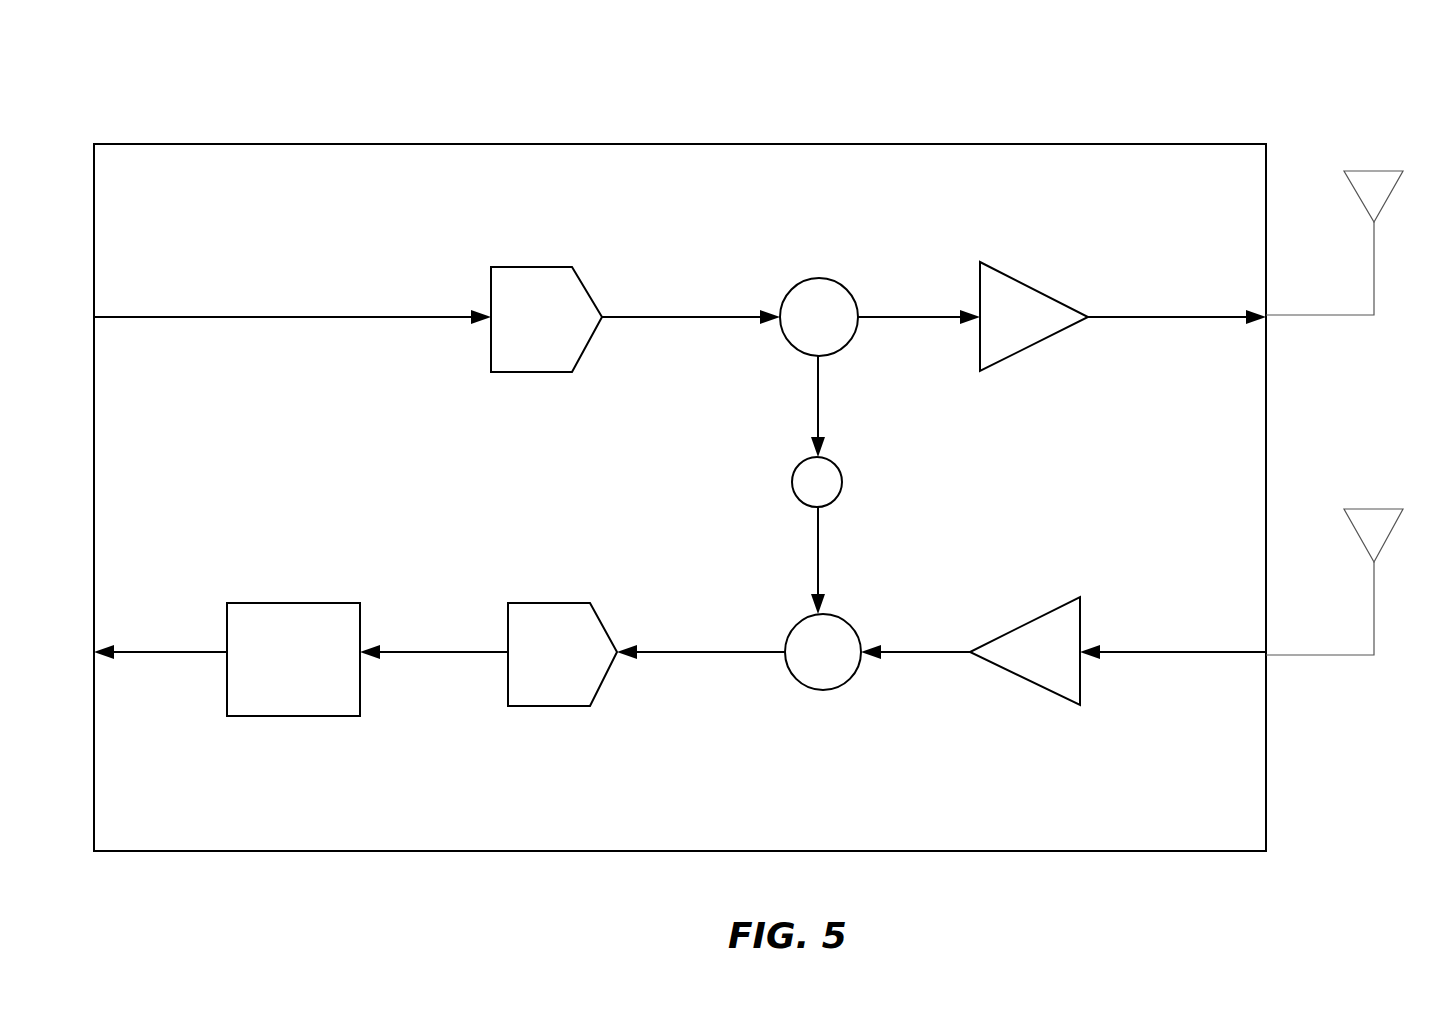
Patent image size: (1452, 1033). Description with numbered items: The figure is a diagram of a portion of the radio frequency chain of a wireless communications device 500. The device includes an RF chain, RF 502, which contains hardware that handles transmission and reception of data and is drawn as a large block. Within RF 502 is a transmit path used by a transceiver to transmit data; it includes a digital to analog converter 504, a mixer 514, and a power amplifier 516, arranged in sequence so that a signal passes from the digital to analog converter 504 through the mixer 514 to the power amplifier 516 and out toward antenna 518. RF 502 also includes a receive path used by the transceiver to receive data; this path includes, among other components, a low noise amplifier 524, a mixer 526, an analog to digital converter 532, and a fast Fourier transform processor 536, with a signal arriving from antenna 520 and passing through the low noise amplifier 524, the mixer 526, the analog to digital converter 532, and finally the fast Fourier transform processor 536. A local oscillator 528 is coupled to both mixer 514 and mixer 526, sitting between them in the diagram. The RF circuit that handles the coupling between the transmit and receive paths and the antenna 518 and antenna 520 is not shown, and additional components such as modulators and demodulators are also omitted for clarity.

The wireless communications device 500 is at (1330, 58).
The RF 502 is at (680, 497).
The digital to analog converter 504 is at (546, 319).
The mixer 514 is at (872, 294).
The power amplifier 516 is at (1047, 302).
The antenna 518 is at (1354, 294).
The antenna 520 is at (1354, 633).
The low noise amplifier 524 is at (1025, 687).
The mixer 526 is at (870, 683).
The local oscillator 528 is at (864, 514).
The analog to digital converter 532 is at (562, 654).
The fast Fourier transform (FFT) processor 536 is at (293, 659).